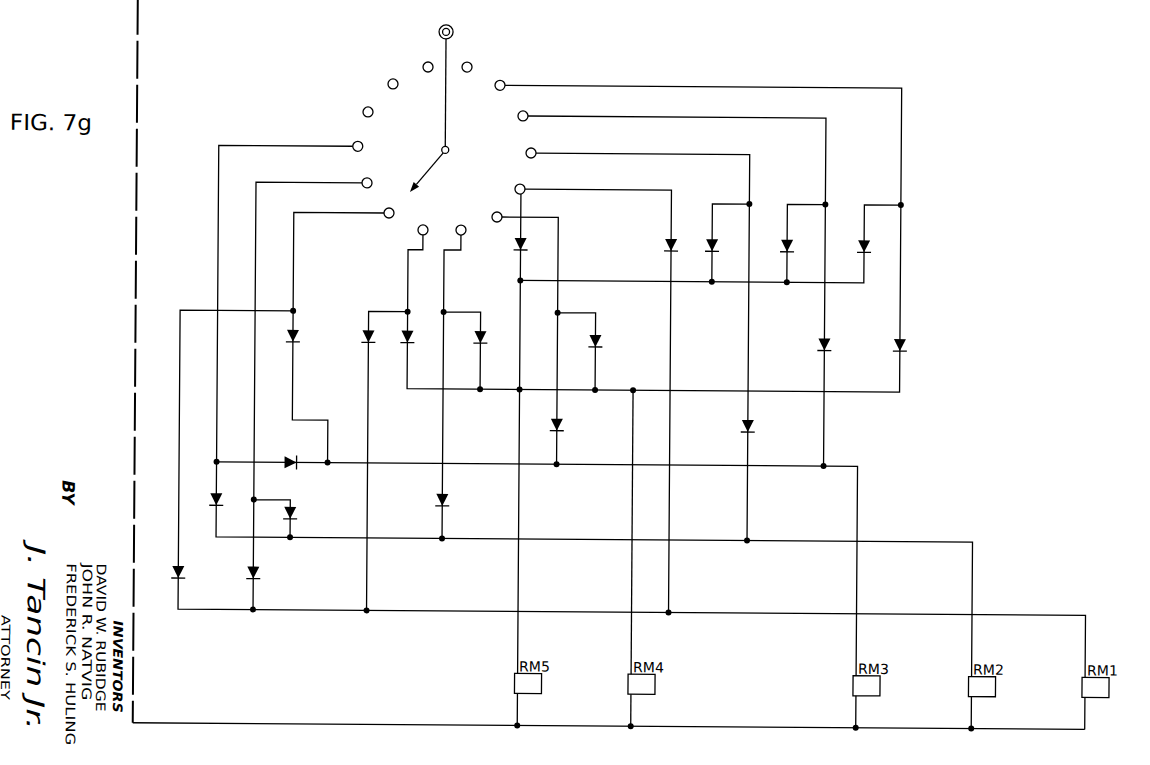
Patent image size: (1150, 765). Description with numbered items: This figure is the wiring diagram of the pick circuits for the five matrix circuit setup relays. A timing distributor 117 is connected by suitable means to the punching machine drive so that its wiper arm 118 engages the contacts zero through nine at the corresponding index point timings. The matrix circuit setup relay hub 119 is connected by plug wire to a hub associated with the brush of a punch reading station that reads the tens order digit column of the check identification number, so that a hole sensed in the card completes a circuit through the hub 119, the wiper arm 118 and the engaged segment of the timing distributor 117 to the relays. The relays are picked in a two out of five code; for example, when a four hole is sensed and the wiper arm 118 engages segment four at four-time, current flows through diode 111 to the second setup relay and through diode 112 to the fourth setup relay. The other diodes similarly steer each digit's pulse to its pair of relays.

The diode 111 is at (441, 494).
The diode 112 is at (486, 342).
The timing distributor 117 is at (368, 89).
The wiper arm 118 is at (428, 171).
The matrix circuit setup relay hub 119 is at (451, 29).